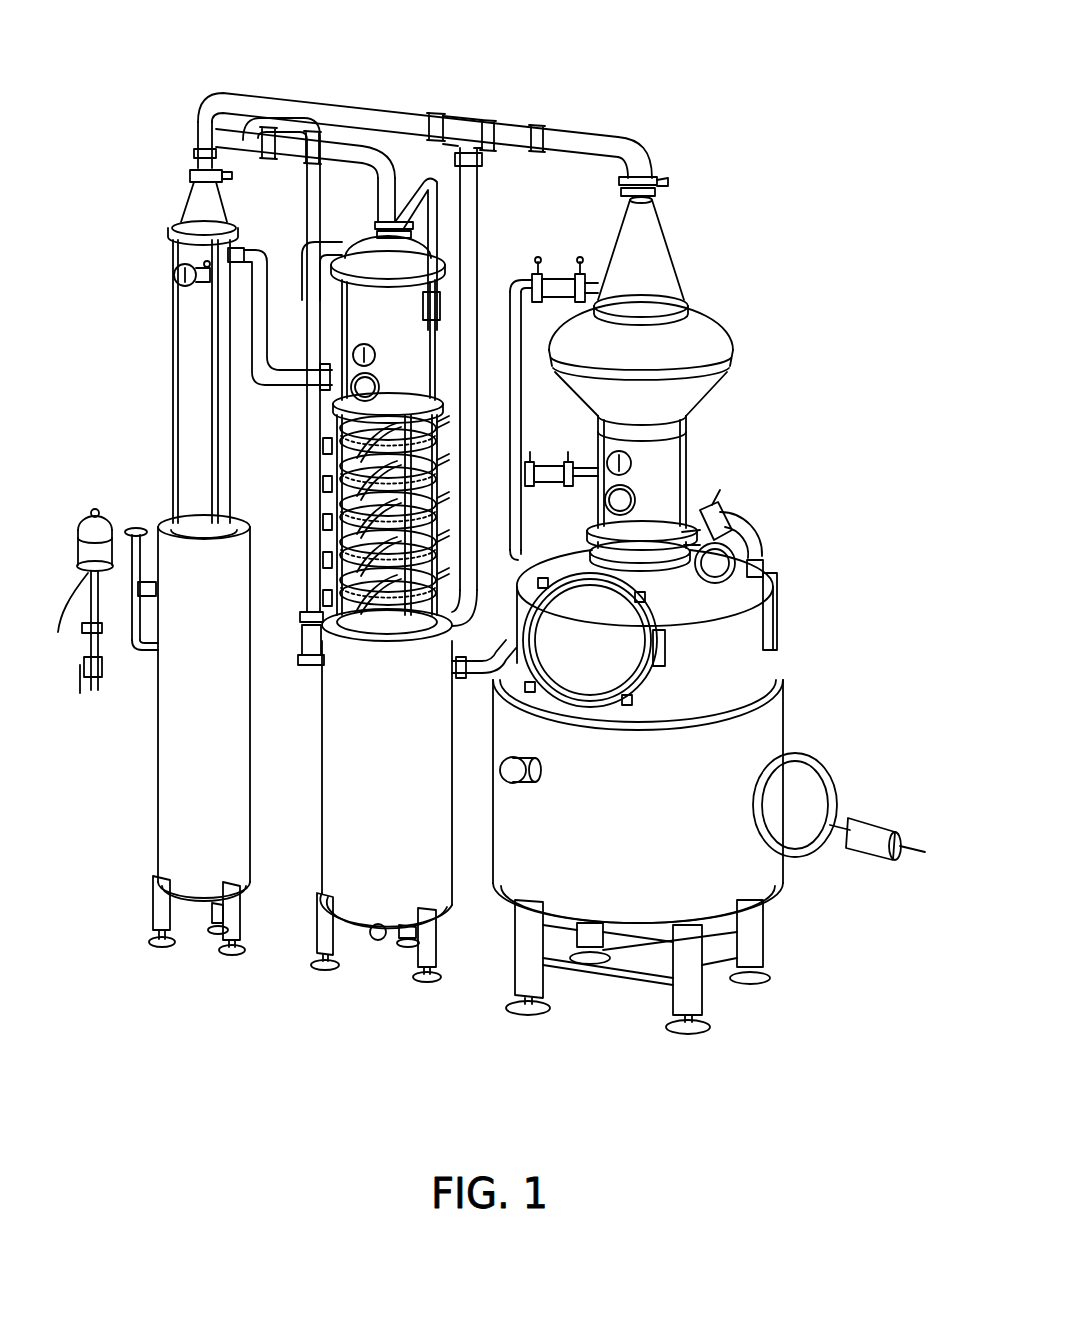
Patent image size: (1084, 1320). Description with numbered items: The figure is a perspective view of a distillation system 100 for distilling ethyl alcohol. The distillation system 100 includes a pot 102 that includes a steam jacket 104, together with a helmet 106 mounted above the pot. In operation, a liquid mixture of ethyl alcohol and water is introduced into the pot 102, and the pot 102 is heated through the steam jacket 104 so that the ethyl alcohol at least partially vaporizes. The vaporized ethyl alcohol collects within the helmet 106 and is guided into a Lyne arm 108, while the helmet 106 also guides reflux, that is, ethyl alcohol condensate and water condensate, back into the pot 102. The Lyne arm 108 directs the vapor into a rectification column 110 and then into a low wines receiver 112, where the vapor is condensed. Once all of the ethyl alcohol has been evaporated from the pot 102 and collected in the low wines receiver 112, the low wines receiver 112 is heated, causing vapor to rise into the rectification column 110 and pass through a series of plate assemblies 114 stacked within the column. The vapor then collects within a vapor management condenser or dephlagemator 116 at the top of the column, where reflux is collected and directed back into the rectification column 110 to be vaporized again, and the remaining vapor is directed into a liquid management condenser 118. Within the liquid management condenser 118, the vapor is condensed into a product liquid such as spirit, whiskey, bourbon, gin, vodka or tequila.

The distillation system 100 is at (743, 114).
The pot 102 is at (779, 516).
The steam jacket 104 is at (781, 718).
The helmet 106 is at (713, 328).
The Lyne arm 108 is at (578, 135).
The rectification column 110 is at (443, 458).
The low wines receiver 112 is at (360, 825).
The plate assemblies 114 is at (392, 607).
The dephlagemator 116 is at (417, 207).
The liquid management condenser 118 is at (195, 345).